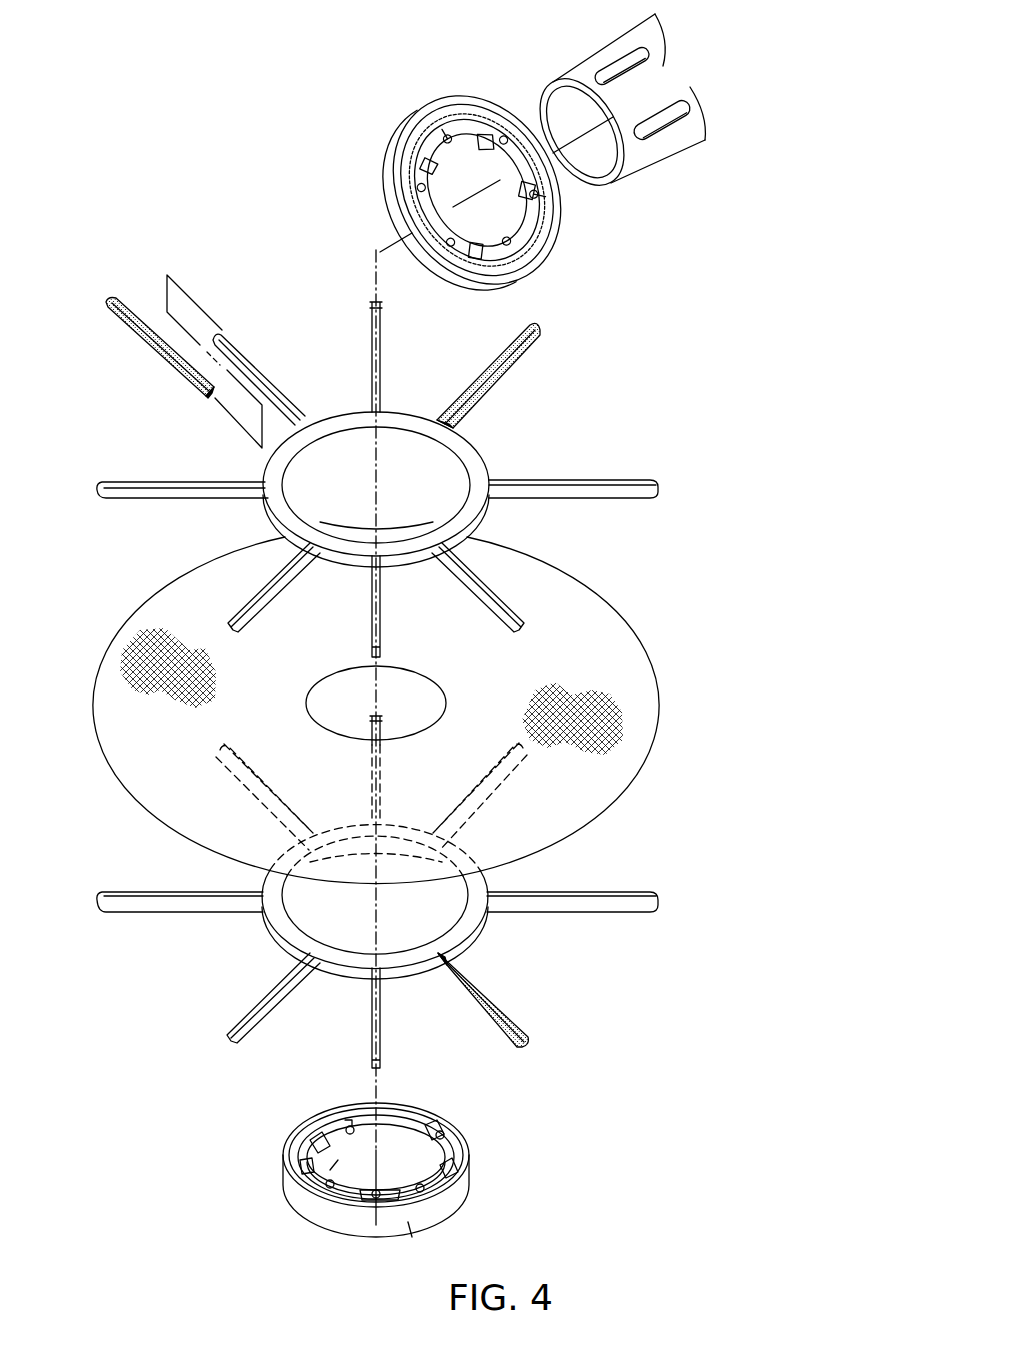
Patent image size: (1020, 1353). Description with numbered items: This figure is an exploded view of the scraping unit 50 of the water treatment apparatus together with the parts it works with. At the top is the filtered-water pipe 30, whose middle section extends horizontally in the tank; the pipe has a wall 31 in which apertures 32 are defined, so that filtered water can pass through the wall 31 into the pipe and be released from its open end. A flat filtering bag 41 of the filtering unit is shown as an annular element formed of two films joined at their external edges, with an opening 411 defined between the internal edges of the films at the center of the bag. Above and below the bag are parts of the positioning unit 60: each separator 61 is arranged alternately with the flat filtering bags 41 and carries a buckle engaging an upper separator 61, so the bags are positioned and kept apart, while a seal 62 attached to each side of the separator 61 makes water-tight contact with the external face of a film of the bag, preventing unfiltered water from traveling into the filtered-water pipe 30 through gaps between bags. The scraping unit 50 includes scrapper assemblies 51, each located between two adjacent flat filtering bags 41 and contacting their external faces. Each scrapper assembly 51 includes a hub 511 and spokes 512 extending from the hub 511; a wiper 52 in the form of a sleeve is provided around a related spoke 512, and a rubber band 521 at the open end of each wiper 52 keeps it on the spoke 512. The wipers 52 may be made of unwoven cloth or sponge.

The filtered-water pipe 30 is at (640, 132).
The wall 31 is at (637, 164).
The apertures 32 is at (683, 152).
The flat filtering bag 41 is at (429, 710).
The opening 411 is at (418, 712).
The scraping unit 50 is at (428, 633).
The scrapper assembly 51 is at (405, 659).
The hub 511 is at (468, 453).
The spokes 512 is at (610, 492).
The wiper 52 is at (366, 622).
The rubber band 521 is at (205, 390).
The positioning unit 60 is at (455, 628).
The separator 61 is at (480, 108).
The seal 62 is at (430, 117).